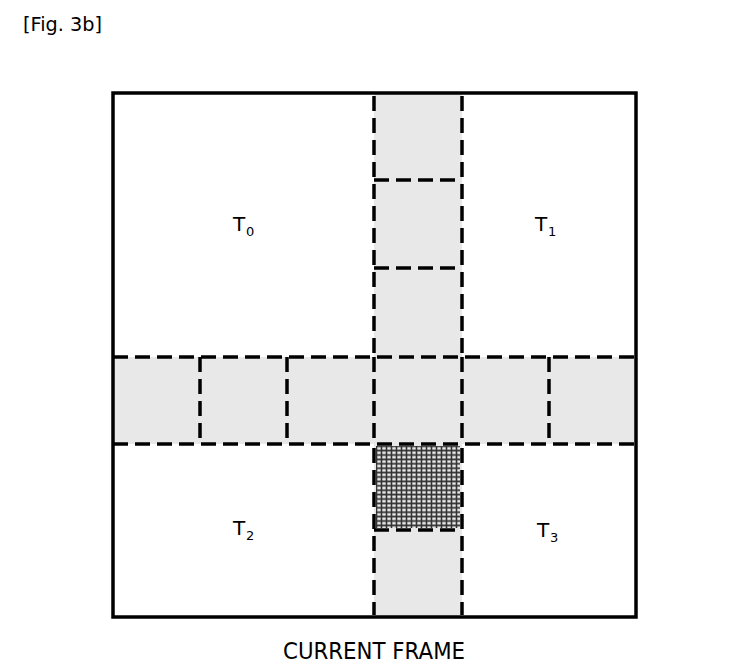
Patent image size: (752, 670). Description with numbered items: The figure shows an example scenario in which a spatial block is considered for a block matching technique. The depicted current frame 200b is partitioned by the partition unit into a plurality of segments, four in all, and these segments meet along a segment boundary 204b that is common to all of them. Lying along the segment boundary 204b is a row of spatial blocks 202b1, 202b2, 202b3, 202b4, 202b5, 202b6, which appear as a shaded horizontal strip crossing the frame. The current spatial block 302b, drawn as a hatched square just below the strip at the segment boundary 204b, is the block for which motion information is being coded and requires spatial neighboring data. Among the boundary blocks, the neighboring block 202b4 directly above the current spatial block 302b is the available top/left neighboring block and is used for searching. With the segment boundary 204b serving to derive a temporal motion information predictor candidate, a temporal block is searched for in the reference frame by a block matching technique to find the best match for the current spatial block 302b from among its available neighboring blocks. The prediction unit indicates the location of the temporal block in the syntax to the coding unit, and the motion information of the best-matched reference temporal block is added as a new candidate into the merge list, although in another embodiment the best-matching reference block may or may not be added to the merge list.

The current frame 200b is at (235, 108).
The segment boundary 204b is at (153, 357).
The spatial block 202b1 is at (187, 421).
The spatial block 202b2 is at (274, 421).
The spatial block 202b3 is at (361, 421).
The neighboring block 202b4 is at (448, 421).
The spatial block 202b5 is at (536, 421).
The spatial block 202b6 is at (623, 421).
The current spatial block 302b is at (452, 485).